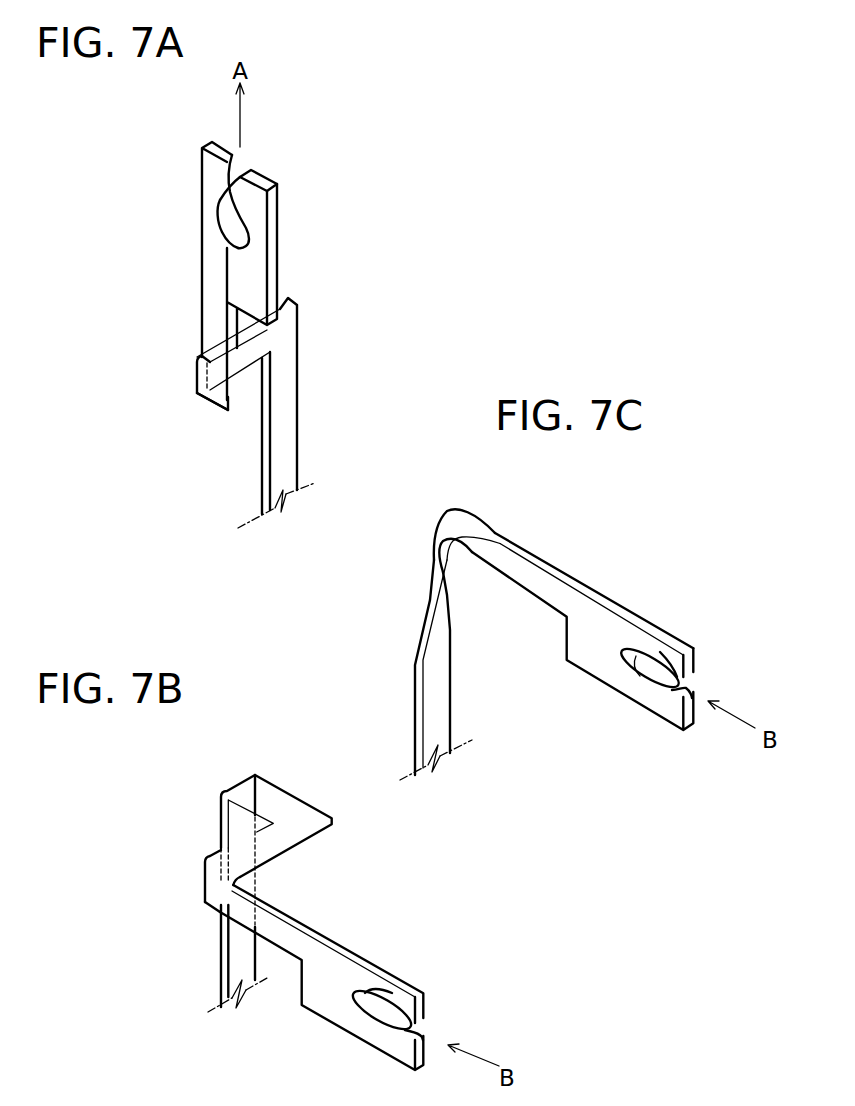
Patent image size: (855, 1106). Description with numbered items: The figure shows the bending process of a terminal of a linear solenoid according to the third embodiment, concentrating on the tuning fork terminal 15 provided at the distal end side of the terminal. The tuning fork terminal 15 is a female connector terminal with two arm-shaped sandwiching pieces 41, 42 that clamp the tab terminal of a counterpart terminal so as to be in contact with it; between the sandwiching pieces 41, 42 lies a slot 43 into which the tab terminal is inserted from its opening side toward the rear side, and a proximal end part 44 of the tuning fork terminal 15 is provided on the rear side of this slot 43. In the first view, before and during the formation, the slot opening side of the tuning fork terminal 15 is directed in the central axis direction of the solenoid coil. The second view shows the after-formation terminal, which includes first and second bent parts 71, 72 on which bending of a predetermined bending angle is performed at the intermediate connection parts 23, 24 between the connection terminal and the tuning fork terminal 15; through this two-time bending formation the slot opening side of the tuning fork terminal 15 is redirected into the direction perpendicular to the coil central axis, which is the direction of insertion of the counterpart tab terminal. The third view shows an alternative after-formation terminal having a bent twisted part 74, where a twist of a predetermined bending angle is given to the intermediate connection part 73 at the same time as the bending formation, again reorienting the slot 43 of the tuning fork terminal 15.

In FIG. 7A, the tuning fork terminal 15 is at (363, 78).
In FIG. 7B, the tuning fork terminal 15 is at (403, 880).
In FIG. 7C, the tuning fork terminal 15 is at (627, 500).
In FIG. 7A, the connection part 23 is at (287, 390).
In FIG. 7B, the connection part 23 is at (220, 960).
In FIG. 7C, the connection part 23 is at (445, 724).
In FIG. 7A, the connection part 24 is at (210, 402).
In FIG. 7B, the connection part 24 is at (203, 893).
In FIG. 7A, the sandwiching piece 41 is at (223, 168).
In FIG. 7B, the sandwiching piece 41 is at (383, 984).
In FIG. 7C, the sandwiching piece 41 is at (673, 658).
In FIG. 7A, the sandwiching piece 42 is at (257, 196).
In FIG. 7B, the sandwiching piece 42 is at (414, 1040).
In FIG. 7C, the sandwiching piece 42 is at (690, 690).
In FIG. 7A, the slot 43 is at (225, 221).
In FIG. 7B, the slot 43 is at (375, 1022).
In FIG. 7C, the slot 43 is at (637, 660).
In FIG. 7A, the proximal end part 44 is at (215, 312).
In FIG. 7B, the proximal end part 44 is at (290, 943).
In FIG. 7C, the proximal end part 44 is at (545, 600).
In FIG. 7A, the first bent part 71 is at (197, 386).
In FIG. 7B, the first bent part 71 is at (205, 866).
In FIG. 7B, the second bent part 72 is at (238, 783).
In FIG. 7C, the connection part 73 is at (545, 557).
In FIG. 7C, the bent twisted part 74 is at (432, 518).